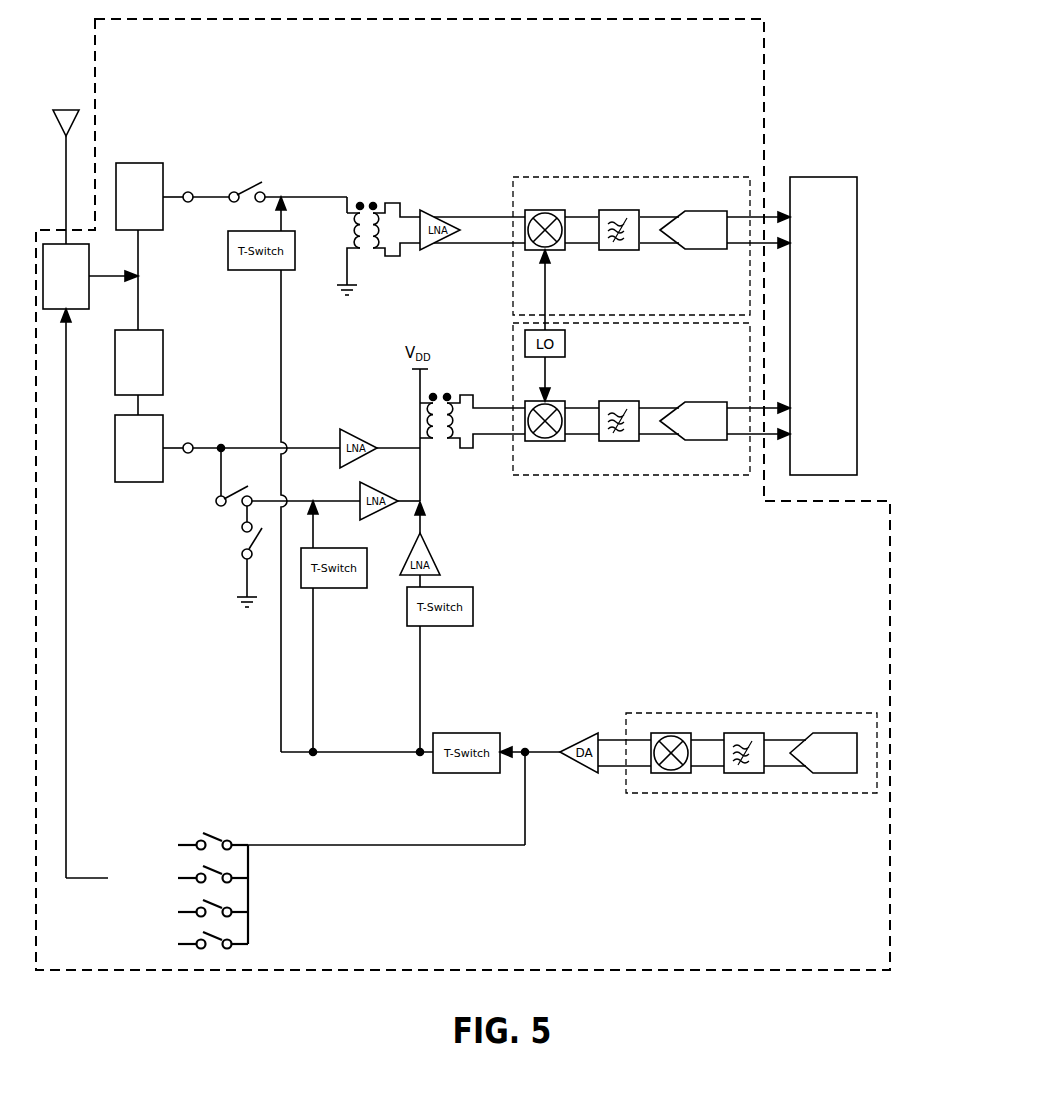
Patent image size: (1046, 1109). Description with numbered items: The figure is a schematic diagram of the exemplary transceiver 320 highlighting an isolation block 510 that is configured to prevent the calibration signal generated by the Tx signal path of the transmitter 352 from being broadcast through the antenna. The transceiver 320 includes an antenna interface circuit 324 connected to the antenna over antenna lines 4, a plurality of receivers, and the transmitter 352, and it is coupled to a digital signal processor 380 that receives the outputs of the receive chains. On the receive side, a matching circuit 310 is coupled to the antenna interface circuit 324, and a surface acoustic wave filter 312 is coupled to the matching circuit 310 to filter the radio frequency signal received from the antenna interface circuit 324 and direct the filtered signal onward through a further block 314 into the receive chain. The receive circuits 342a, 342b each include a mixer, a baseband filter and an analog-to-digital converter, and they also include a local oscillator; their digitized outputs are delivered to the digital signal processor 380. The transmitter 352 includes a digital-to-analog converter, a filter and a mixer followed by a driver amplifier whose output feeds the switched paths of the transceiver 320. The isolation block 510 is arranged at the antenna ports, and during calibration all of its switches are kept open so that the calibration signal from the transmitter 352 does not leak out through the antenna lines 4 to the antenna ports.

The antenna / RF port lines 4 is at (73, 204).
The matching circuit 310 is at (122, 207).
The surface acoustic wave (SAW) filter 312 is at (122, 373).
The module 314 is at (122, 459).
The antenna interface circuit 324 is at (49, 287).
The receive circuit 342a is at (627, 298).
The receive circuit 342b is at (627, 371).
The digital signal processor 380 is at (806, 439).
The transceiver 320 is at (630, 587).
The transmitter 352 is at (753, 697).
The isolation block 510 is at (161, 805).